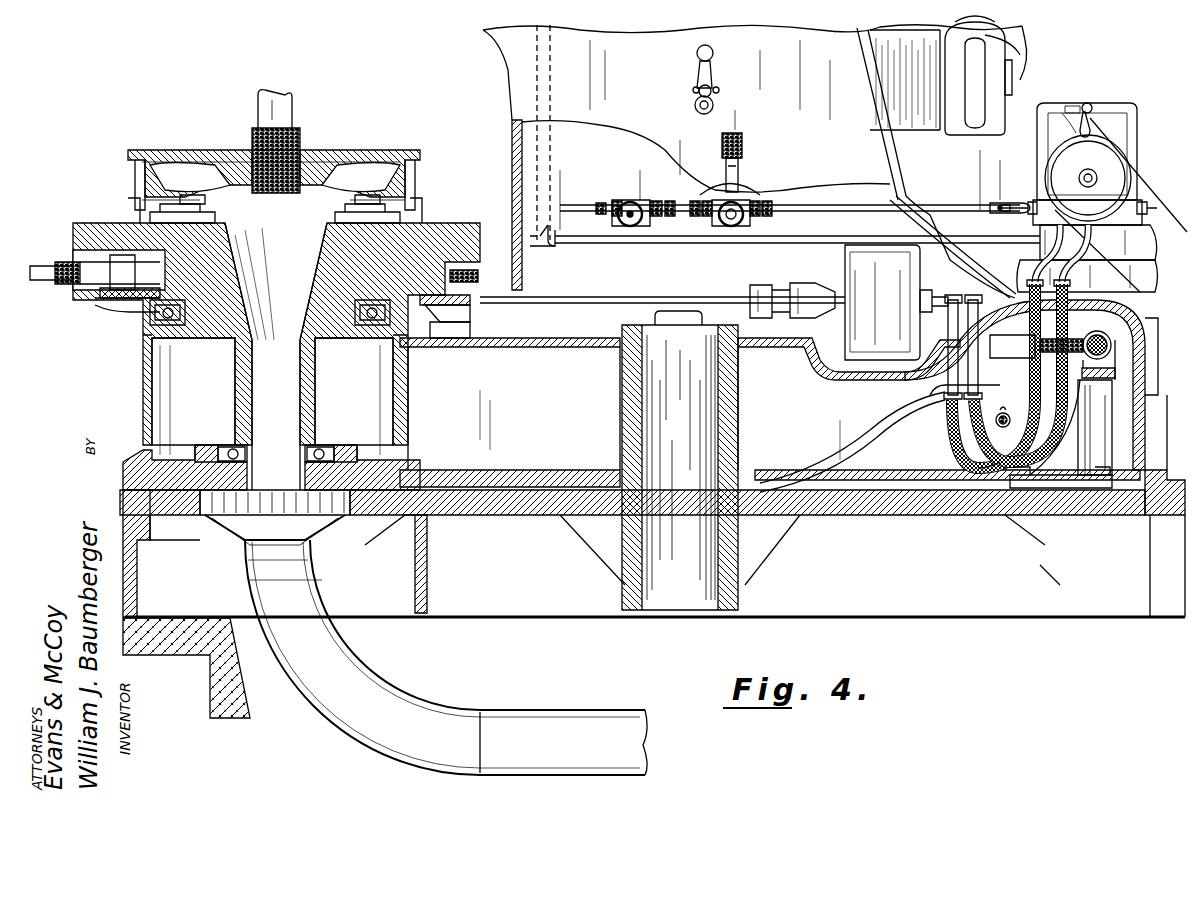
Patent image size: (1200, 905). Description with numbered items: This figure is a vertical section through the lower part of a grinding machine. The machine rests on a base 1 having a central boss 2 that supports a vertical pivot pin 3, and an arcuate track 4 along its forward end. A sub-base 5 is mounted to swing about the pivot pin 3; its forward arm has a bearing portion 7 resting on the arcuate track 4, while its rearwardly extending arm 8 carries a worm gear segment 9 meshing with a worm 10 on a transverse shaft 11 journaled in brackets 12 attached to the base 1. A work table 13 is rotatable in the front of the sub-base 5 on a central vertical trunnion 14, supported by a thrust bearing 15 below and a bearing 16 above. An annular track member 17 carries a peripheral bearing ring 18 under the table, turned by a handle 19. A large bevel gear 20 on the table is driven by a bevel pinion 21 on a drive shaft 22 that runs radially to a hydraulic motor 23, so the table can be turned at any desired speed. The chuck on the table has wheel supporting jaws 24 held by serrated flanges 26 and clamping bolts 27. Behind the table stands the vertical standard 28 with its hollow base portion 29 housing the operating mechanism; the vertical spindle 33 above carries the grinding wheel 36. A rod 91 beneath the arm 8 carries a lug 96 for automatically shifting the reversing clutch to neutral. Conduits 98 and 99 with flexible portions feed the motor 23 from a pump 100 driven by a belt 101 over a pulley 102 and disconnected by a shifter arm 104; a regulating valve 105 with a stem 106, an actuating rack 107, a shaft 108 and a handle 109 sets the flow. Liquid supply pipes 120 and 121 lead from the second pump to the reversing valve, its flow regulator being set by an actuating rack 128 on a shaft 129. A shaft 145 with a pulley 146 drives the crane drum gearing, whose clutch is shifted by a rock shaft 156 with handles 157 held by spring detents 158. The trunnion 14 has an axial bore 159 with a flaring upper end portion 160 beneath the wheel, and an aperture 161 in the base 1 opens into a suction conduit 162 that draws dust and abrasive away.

The base 1 is at (1072, 602).
The central boss 2 is at (622, 583).
The vertical pivot pin 3 is at (735, 548).
The arcuate track 4 is at (400, 520).
The sub-base 5 is at (520, 345).
The bearing portion 7 is at (178, 470).
The rearwardly extending arm 8 is at (888, 422).
The worm gear segment 9 is at (1072, 330).
The worm 10 is at (1106, 335).
The transverse shaft 11 is at (1110, 348).
The brackets 12 is at (1085, 428).
The table 13 is at (432, 224).
The central vertical trunnion 14 is at (238, 394).
The thrust bearing 15 is at (228, 445).
The bearing 16 is at (272, 391).
The annular track member 17 is at (95, 303).
The peripheral bearing ring 18 is at (70, 285).
The handle 19 is at (45, 265).
The bevel gear 20 is at (135, 320).
The bevel pinion 21 is at (462, 338).
The drive shaft 22 is at (622, 290).
The hydraulic motor 23 is at (845, 270).
The wheel supporting jaws 24 is at (420, 188).
The serrated flanges 26 is at (160, 214).
The clamping bolts 27 is at (205, 200).
The vertical standard 28 is at (890, 148).
The hollow base portion 29 is at (1138, 433).
The vertical spindle 33 is at (292, 95).
The grinding wheel 36 is at (300, 130).
The rod 91 is at (992, 448).
The lug 96 is at (1003, 413).
The conduit 98 is at (958, 335).
The conduit 99 is at (945, 383).
The pump 100 is at (1130, 112).
The belt 101 is at (1162, 180).
The pulley 102 is at (1118, 166).
The shifter arm 104 is at (1092, 118).
The regulating valve 105 is at (1140, 230).
The valve stem 106 is at (1022, 202).
The actuating rack 107 is at (920, 206).
The shaft 108 is at (750, 218).
The handle 109 is at (740, 182).
The liquid supply pipe 120 is at (830, 250).
The liquid supply pipe 121 is at (930, 245).
The actuating rack 128 is at (598, 210).
The shaft 129 is at (632, 210).
The shaft 145 is at (1005, 34).
The pulley 146 is at (1018, 50).
The rock shaft 156 is at (713, 105).
The handles 157 is at (697, 62).
The spring detent 158 is at (716, 90).
The axial bore 159 is at (300, 363).
The flaring upper end portion 160 is at (292, 305).
The aperture 161 is at (240, 525).
The suction conduit 162 is at (300, 580).